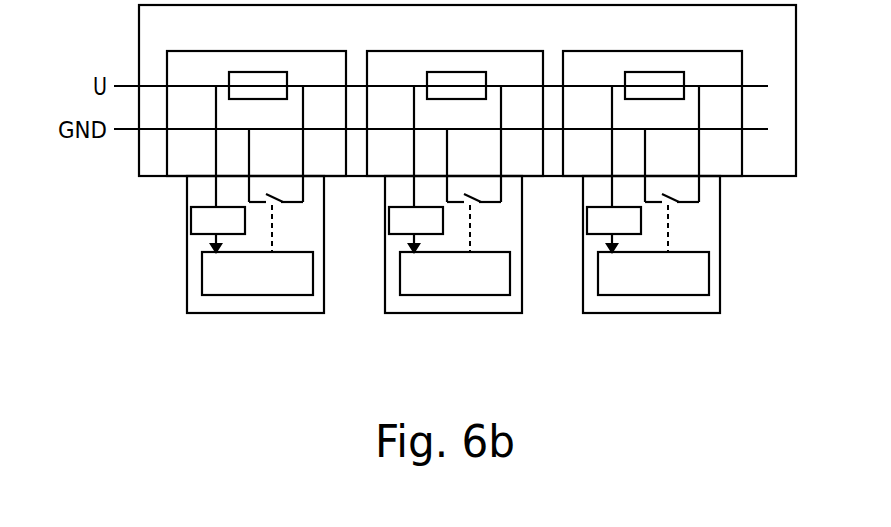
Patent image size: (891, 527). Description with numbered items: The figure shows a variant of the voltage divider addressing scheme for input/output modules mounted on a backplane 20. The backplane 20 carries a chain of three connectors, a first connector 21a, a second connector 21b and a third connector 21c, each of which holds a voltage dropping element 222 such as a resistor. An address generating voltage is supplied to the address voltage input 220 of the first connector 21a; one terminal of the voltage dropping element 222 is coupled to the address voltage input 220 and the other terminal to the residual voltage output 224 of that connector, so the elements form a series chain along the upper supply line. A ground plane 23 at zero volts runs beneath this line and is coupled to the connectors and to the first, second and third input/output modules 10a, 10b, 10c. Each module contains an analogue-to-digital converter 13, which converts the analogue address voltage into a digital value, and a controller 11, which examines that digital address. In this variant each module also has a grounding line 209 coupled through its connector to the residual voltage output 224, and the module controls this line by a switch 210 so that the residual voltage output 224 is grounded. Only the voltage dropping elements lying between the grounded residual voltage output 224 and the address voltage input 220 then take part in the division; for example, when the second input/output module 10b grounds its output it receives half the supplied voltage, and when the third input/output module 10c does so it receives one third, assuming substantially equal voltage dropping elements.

The backplane 20 is at (796, 52).
The first connector 21a is at (274, 51).
The second connector 21b is at (471, 51).
The third connector 21c is at (669, 51).
The address voltage input 220 is at (167, 86).
The voltage dropping element 222 is at (244, 72).
The residual voltage output 224 is at (348, 86).
The ground plane 23 is at (125, 129).
The switch 210 is at (269, 193).
The grounding line 209 is at (303, 202).
The analogue-to-digital converter 13 is at (191, 218).
The controller 11 is at (202, 277).
The first input/output module 10a is at (240, 313).
The second input/output module 10b is at (438, 313).
The third input/output module 10c is at (636, 313).